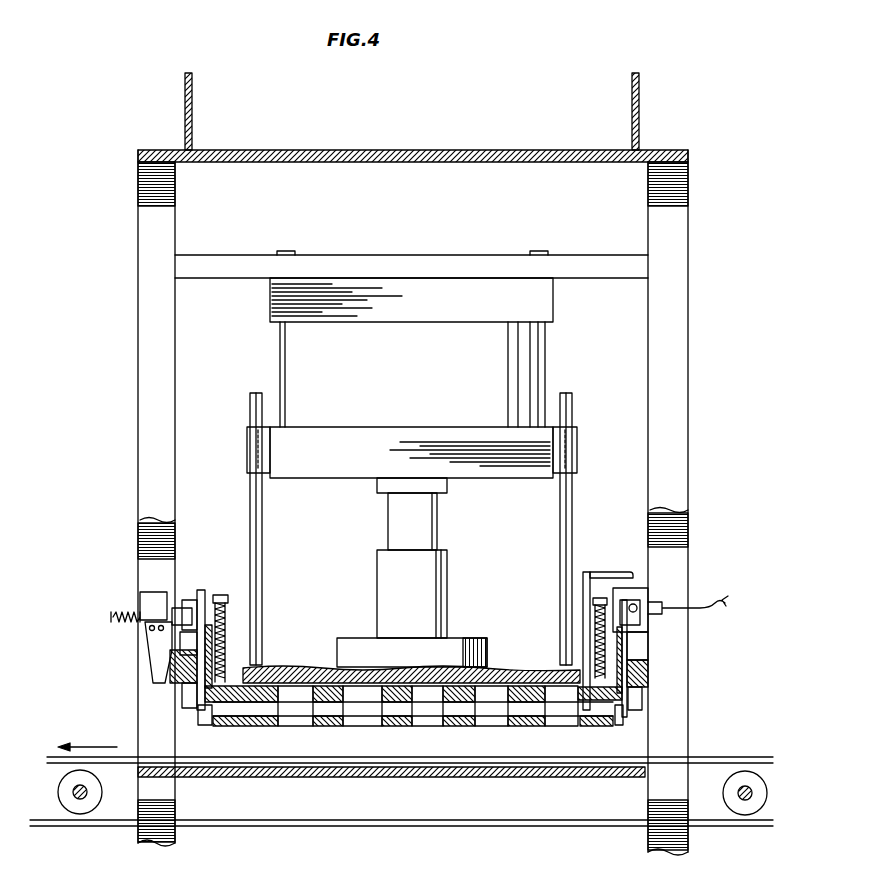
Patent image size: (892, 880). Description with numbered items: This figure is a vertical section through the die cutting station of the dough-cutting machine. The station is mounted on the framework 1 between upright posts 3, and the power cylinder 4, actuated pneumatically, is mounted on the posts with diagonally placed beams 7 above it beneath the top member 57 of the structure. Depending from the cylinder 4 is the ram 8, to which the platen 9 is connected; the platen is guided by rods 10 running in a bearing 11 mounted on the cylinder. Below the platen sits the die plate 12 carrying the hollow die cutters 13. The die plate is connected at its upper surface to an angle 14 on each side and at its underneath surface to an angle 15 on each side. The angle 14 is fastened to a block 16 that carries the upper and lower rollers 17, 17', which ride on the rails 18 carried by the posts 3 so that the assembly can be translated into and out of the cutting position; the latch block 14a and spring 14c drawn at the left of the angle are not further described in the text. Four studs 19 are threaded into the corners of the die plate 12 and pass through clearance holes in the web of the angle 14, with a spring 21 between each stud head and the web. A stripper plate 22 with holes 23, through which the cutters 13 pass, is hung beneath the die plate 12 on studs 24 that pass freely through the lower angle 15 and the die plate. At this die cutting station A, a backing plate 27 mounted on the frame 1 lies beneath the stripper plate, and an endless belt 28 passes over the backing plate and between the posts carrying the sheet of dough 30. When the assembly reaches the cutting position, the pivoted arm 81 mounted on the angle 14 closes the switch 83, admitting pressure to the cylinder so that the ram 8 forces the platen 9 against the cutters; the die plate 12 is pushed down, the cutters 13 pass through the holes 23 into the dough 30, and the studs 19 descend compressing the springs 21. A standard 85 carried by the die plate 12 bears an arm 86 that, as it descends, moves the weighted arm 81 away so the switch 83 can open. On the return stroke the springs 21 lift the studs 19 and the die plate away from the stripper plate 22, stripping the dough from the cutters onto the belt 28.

The framework 1 is at (178, 801).
The posts 3 is at (138, 530).
The power cylinder 4 is at (411, 352).
The beams 7 is at (192, 110).
The ram 8 is at (427, 534).
The platen 9 is at (508, 670).
The rods 10 is at (262, 532).
The bearing 11 is at (247, 452).
The die plate 12 is at (269, 678).
The die cutters 13 is at (295, 728).
The angle 14 is at (240, 672).
The latch block 14a is at (185, 612).
The spring 14c is at (148, 602).
The angle 15 is at (203, 723).
The block 16 is at (203, 713).
The upper roller 17 is at (406, 652).
The lower roller 17' is at (409, 711).
The rails 18 is at (170, 673).
The studs 19 is at (220, 595).
The spring 21 is at (228, 613).
The stripper plate 22 is at (263, 728).
The holes 23 is at (340, 728).
The studs 24 is at (234, 728).
The backing plate 27 is at (408, 768).
The endless belt 28 is at (327, 820).
The sheet of dough 30 is at (537, 763).
The top plate 57 is at (400, 150).
The pivoted arm 81 is at (662, 607).
The switch 83 is at (640, 590).
The standard 85 is at (583, 589).
The arm 86 is at (622, 572).
The die cutting station A is at (460, 732).